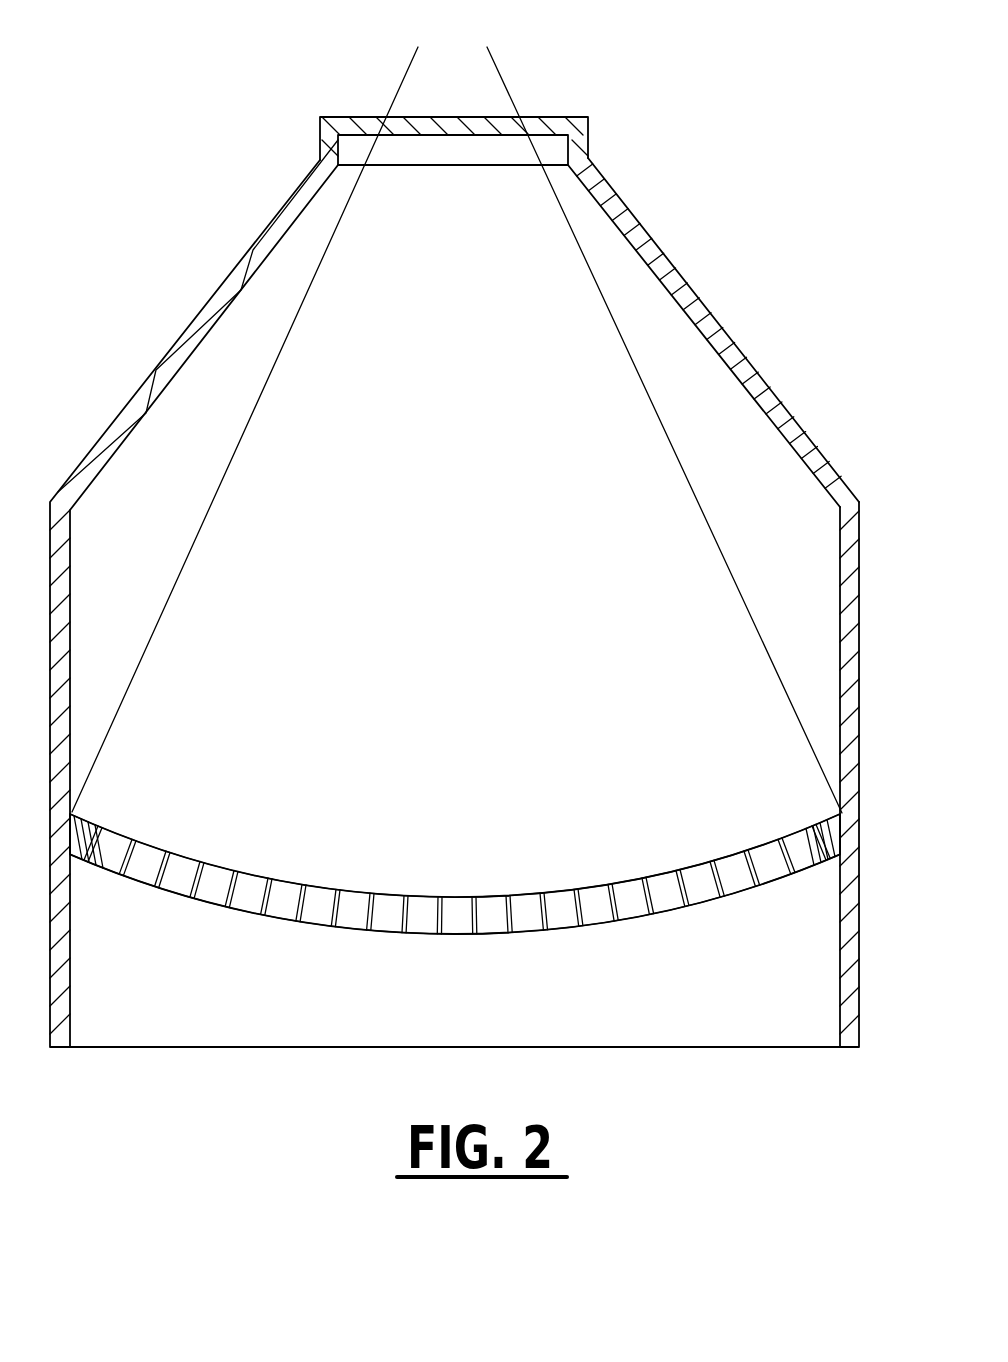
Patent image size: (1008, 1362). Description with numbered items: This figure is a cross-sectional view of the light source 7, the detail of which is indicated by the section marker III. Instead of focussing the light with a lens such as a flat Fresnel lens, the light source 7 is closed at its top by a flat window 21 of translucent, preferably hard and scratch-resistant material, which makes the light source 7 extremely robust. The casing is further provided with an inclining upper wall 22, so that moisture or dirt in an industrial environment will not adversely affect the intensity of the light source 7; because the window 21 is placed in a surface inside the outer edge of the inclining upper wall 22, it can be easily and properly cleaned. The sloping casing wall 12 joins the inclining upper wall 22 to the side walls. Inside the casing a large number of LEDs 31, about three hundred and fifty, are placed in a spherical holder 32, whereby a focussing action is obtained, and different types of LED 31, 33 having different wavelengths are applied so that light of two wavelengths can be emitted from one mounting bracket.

The light source 7 is at (866, 1078).
The sloped housing wall 12 is at (748, 315).
The flat window 21 is at (433, 118).
The inclining upper wall 22 is at (160, 332).
The LEDs 31 is at (320, 885).
The spherical holder 32 is at (305, 955).
The LED 33 is at (532, 917).
The section indicator III is at (606, 850).